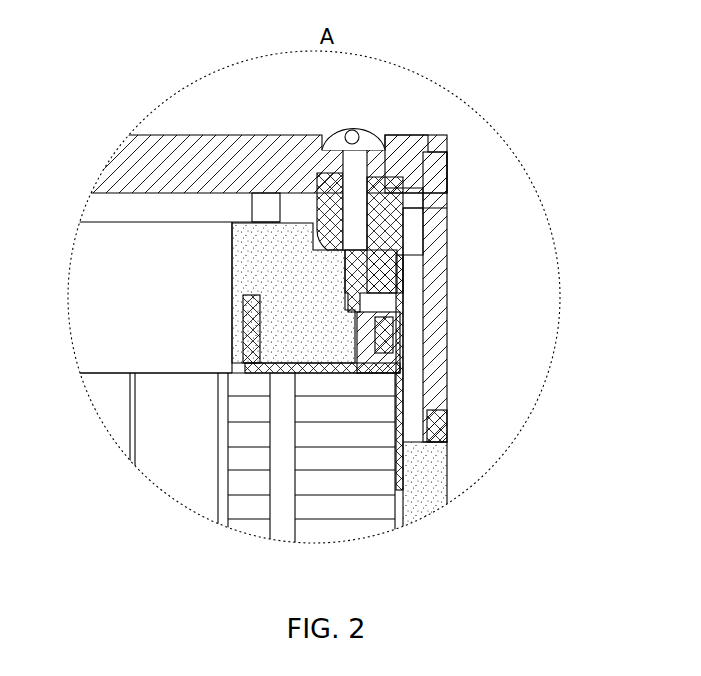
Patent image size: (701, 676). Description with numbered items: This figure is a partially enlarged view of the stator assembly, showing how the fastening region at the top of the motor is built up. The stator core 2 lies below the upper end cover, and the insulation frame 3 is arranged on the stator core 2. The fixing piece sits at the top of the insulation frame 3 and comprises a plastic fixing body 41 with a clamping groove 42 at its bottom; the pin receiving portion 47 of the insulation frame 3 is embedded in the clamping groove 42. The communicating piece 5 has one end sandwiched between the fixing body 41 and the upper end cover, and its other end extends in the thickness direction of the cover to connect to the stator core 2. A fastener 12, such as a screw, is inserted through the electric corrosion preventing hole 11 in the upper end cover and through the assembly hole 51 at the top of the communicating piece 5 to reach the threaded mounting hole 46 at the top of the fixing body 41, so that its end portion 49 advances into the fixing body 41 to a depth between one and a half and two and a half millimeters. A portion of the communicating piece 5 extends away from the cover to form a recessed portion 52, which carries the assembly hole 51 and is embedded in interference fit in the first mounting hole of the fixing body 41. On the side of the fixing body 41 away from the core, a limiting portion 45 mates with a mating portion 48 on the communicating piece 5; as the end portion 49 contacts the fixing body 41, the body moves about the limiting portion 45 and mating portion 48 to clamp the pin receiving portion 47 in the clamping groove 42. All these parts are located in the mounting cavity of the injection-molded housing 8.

The stator core 2 is at (342, 483).
The insulation frame 3 is at (232, 345).
The communicating piece 5 is at (400, 377).
The housing 8 is at (443, 483).
The electric corrosion preventing hole 11 is at (333, 163).
The fastener 12 is at (373, 130).
The fixing body 41 is at (395, 212).
The clamping groove 42 is at (393, 298).
The limiting portion 45 is at (400, 253).
The threaded mounting hole 46 is at (340, 198).
The pin receiving portion 47 is at (367, 302).
The mating portion 48 is at (410, 247).
The end portion 49 is at (348, 256).
The assembly hole 51 is at (333, 188).
The recessed portion 52 is at (395, 180).